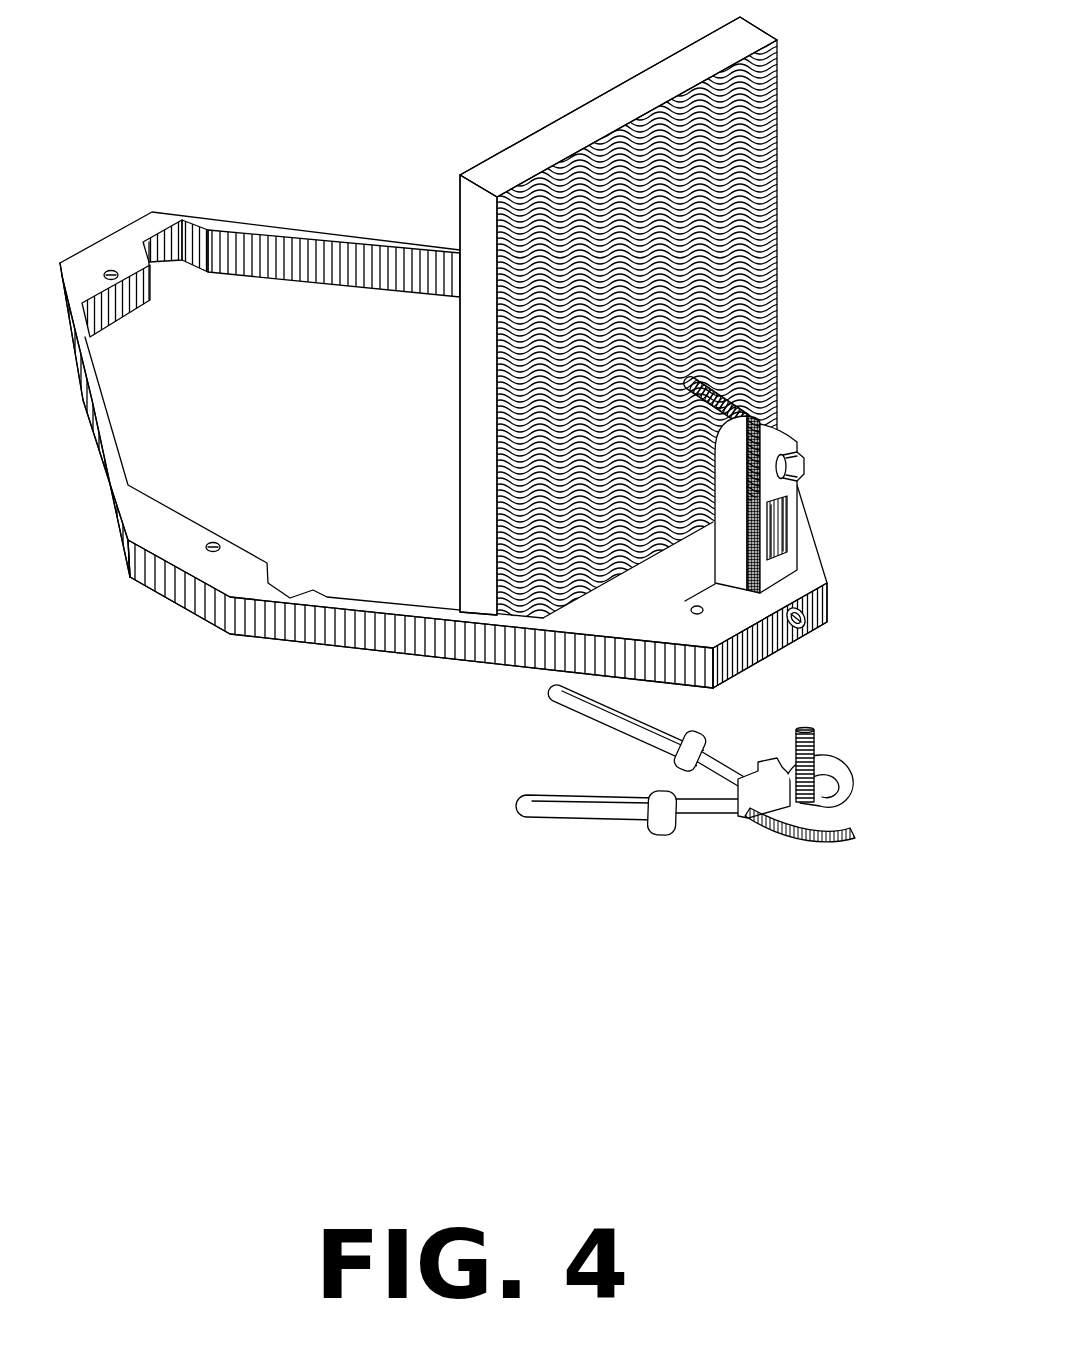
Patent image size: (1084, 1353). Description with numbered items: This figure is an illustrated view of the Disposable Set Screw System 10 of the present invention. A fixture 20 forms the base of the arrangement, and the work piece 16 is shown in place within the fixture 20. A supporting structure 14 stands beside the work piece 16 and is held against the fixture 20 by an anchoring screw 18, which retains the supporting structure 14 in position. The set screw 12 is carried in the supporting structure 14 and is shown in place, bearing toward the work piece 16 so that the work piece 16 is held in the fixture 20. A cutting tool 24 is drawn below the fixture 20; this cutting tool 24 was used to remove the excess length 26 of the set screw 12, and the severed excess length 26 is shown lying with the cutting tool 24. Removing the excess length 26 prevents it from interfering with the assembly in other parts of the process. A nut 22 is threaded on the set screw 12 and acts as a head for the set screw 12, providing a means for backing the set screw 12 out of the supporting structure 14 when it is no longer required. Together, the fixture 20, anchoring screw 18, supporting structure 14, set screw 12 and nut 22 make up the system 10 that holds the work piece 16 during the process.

The Disposable Set Screw System 10 is at (503, 391).
The set screw 12 is at (727, 398).
The supporting structure 14 is at (790, 550).
The work piece 16 is at (612, 108).
The anchoring screw 18 is at (803, 617).
The fixture 20 is at (282, 638).
The nut 22 is at (800, 453).
The cutting tool 24 is at (598, 817).
The excess length of 12 26 is at (832, 757).